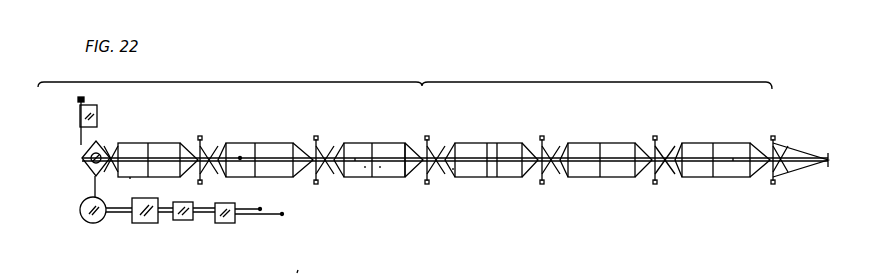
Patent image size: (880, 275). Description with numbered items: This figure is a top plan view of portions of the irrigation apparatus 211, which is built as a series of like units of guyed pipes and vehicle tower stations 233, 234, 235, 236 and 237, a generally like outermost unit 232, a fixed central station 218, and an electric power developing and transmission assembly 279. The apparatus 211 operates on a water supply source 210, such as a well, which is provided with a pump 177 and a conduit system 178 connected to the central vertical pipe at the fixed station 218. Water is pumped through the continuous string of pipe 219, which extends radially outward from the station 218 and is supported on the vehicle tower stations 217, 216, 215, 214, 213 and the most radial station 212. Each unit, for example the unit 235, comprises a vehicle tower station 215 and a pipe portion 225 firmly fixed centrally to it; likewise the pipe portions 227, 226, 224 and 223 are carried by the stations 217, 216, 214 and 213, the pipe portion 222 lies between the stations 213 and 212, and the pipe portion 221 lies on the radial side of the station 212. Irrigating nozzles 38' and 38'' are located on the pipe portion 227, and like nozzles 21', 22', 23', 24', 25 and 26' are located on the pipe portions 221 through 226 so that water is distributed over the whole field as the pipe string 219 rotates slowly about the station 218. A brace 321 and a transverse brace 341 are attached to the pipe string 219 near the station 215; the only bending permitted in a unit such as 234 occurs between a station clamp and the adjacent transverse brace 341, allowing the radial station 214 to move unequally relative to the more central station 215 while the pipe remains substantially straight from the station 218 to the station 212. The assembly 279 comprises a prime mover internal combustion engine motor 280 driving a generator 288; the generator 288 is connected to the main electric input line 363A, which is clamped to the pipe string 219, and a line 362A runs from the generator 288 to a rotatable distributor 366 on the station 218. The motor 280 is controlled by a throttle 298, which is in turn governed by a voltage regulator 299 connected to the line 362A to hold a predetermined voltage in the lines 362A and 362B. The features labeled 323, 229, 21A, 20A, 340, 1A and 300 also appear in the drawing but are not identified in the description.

The apparatus 211 is at (405, 75).
The water supply source 210 is at (77, 98).
The conduit system 178 is at (99, 127).
The pump 177 is at (79, 120).
The rotatable distributor 366 is at (90, 152).
The fixed station 218 is at (80, 160).
The line 362B is at (94, 186).
The line 362A is at (252, 211).
The unit of guyed pipes and vehicle tower station 237 is at (206, 117).
The pipe portion 227 is at (133, 176).
The vehicle tower station 217 is at (173, 176).
The irrigating nozzle 38' is at (174, 166).
The irrigating nozzle 38'' is at (199, 169).
The nozzle 26' is at (219, 123).
The unit of guyed pipes and vehicle tower station 236 is at (307, 118).
The pipe portion 226 is at (257, 160).
The vehicle tower station 216 is at (316, 140).
The expander 323 is at (338, 176).
The unit of guyed pipes and vehicle tower station 235 is at (340, 200).
The string of pipe 219 is at (355, 160).
The nozzle 25 is at (365, 167).
The lens 229 is at (380, 157).
The brace 321 is at (402, 150).
The pipe portion 225 is at (380, 168).
The vehicle tower station 215 is at (425, 176).
The aperture plate 21A is at (429, 118).
The focusing element 20A is at (438, 116).
The expander cone 340 is at (444, 182).
The transverse brace 341 is at (454, 171).
The unit of guyed pipes and vehicle tower station 234 is at (535, 122).
The pipe portion 224 is at (496, 163).
The vehicle tower station 214 is at (542, 144).
The nozzle 24' is at (540, 175).
The unit of guyed pipes and vehicle tower station 233 is at (657, 121).
The pipe portion 223 is at (612, 160).
The vehicle tower station 213 is at (657, 143).
The nozzle 23' is at (641, 175).
The unit 232 is at (687, 119).
The pipe portion 222 is at (724, 161).
The nozzle 22' is at (734, 187).
The most radial vehicle tower station 212 is at (773, 144).
The nozzle 21' is at (794, 181).
The pipe portion 221 is at (800, 158).
The axis direction 1A is at (577, 213).
The generator 288 is at (84, 220).
The prime mover internal combustion engine motor 280 is at (158, 216).
The electric power developing and transmission assembly 279 is at (75, 244).
The throttle 298 is at (188, 221).
The voltage regulator 299 is at (221, 218).
The main electric input line 363A is at (262, 220).
The processor 300 is at (305, 263).